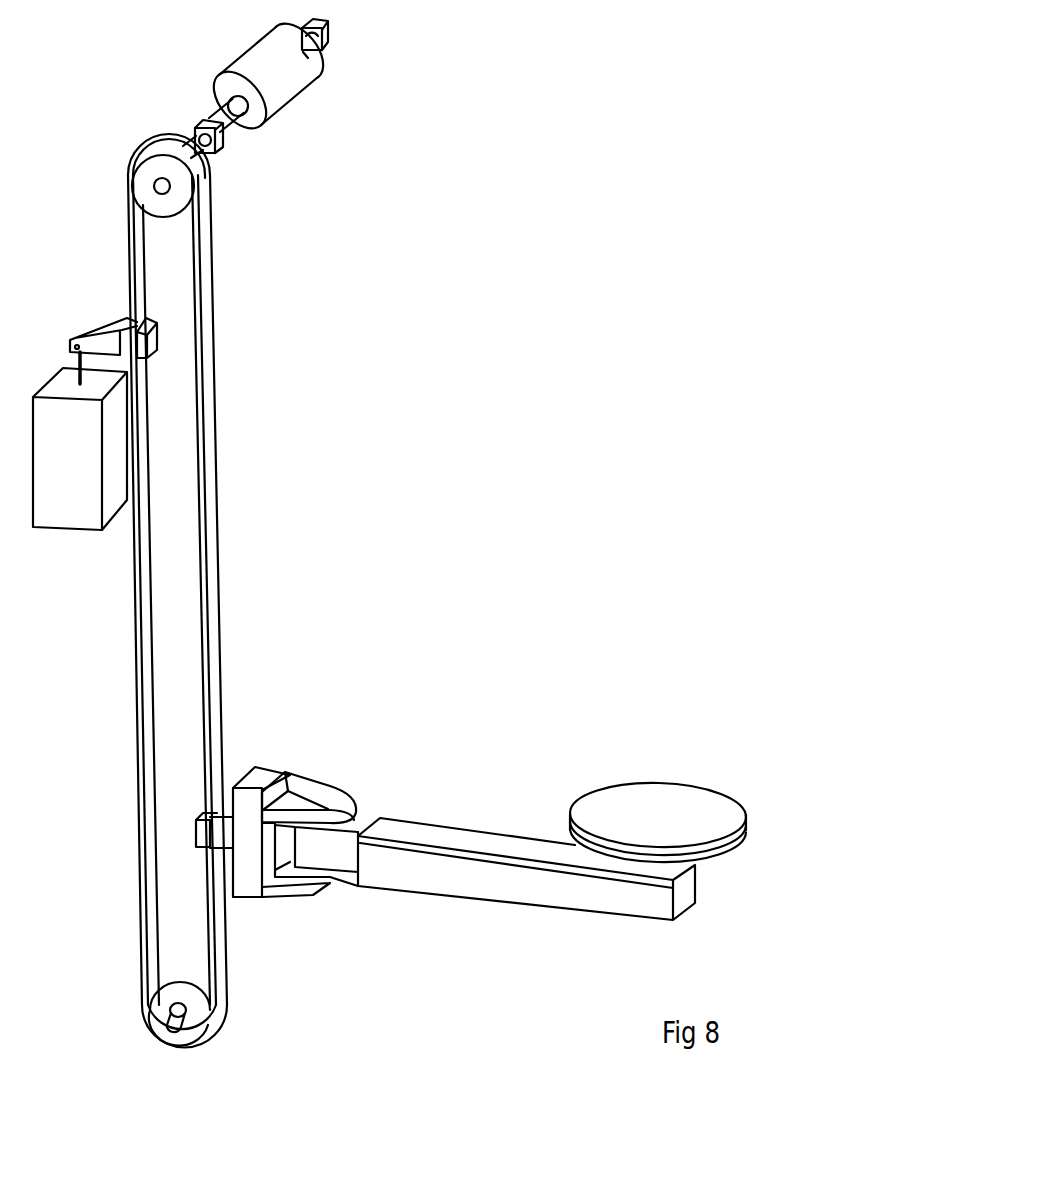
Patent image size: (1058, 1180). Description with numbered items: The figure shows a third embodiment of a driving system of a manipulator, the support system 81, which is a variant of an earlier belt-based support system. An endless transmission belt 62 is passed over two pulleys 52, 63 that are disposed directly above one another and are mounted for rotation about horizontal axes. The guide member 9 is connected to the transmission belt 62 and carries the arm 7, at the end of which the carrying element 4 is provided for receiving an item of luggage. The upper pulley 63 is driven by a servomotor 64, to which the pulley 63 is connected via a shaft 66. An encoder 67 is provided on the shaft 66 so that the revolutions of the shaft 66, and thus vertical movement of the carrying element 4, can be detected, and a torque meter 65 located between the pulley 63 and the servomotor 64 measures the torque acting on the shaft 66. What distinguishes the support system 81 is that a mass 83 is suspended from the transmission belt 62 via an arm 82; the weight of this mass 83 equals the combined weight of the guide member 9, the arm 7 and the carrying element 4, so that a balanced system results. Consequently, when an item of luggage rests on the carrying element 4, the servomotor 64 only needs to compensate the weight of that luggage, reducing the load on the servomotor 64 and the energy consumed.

The carrying element 4 is at (643, 805).
The arm 7 is at (450, 832).
The guide member 9 is at (293, 777).
The pulley 52 is at (200, 1020).
The transmission belt 62 is at (214, 582).
The pulley 63 is at (183, 198).
The servomotor 64 is at (292, 90).
The torque meter 65 is at (224, 142).
The shaft 66 is at (232, 112).
The encoder 67 is at (330, 41).
The support system 81 is at (481, 358).
The arm 82 is at (110, 342).
The mass 83 is at (68, 518).